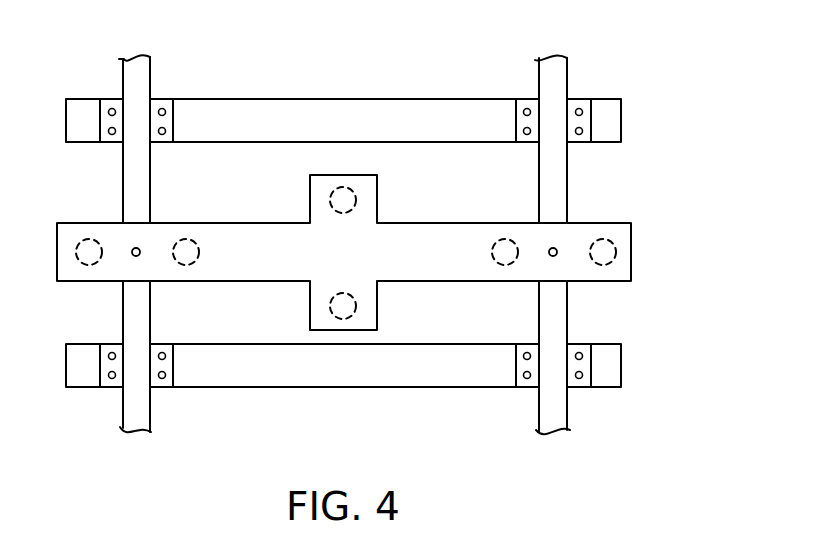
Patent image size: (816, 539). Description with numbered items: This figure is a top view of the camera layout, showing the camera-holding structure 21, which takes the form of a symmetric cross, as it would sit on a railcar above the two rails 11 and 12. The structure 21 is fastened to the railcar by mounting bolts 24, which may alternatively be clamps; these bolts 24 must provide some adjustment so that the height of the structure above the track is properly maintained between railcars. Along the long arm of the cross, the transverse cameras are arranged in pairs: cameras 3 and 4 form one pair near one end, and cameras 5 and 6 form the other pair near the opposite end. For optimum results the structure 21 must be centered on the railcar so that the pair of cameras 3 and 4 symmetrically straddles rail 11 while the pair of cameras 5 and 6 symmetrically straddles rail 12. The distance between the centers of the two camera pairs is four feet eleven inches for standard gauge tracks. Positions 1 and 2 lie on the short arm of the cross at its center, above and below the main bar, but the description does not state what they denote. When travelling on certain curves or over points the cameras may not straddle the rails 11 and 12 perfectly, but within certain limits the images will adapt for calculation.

The first mounting hole 1 is at (349, 188).
The second mounting hole 2 is at (330, 305).
The transverse camera 3 is at (75, 251).
The transverse camera 4 is at (179, 264).
The transverse camera 5 is at (505, 266).
The transverse camera 6 is at (617, 254).
The rail 11 is at (123, 70).
The rail 12 is at (567, 70).
The symmetric cross structure 21 is at (303, 222).
The mounting bolt 24 is at (136, 248).